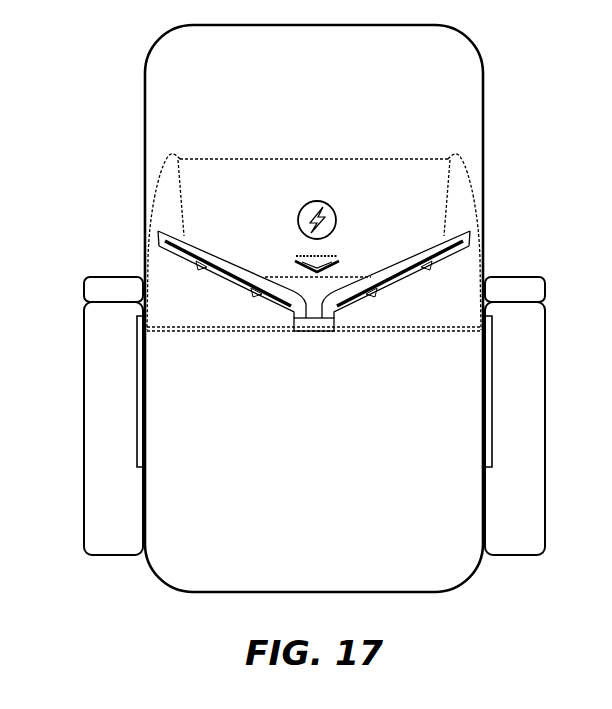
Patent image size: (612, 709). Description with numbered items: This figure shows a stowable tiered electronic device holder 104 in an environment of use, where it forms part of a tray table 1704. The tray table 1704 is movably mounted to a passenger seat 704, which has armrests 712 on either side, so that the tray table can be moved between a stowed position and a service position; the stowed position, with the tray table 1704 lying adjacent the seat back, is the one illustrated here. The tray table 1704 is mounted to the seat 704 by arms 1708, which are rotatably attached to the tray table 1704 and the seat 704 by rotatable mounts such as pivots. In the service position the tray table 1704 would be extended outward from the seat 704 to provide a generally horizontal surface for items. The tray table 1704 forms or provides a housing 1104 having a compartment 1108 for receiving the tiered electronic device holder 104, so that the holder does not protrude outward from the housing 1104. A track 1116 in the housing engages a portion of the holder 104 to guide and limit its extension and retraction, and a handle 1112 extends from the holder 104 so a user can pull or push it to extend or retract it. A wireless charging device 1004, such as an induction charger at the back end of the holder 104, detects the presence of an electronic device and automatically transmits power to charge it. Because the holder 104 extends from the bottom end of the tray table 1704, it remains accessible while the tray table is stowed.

The seat 704 is at (98, 124).
The armrests 712 is at (126, 276).
The arms 1708 is at (137, 373).
The tray table 1704 is at (260, 159).
The housing 1104 is at (265, 226).
The wireless charging device 1004 is at (317, 201).
The compartment 1108 is at (241, 284).
The track 1116 is at (373, 291).
The handle 1112 is at (327, 332).
The tiered electronic device holder 104 is at (316, 366).